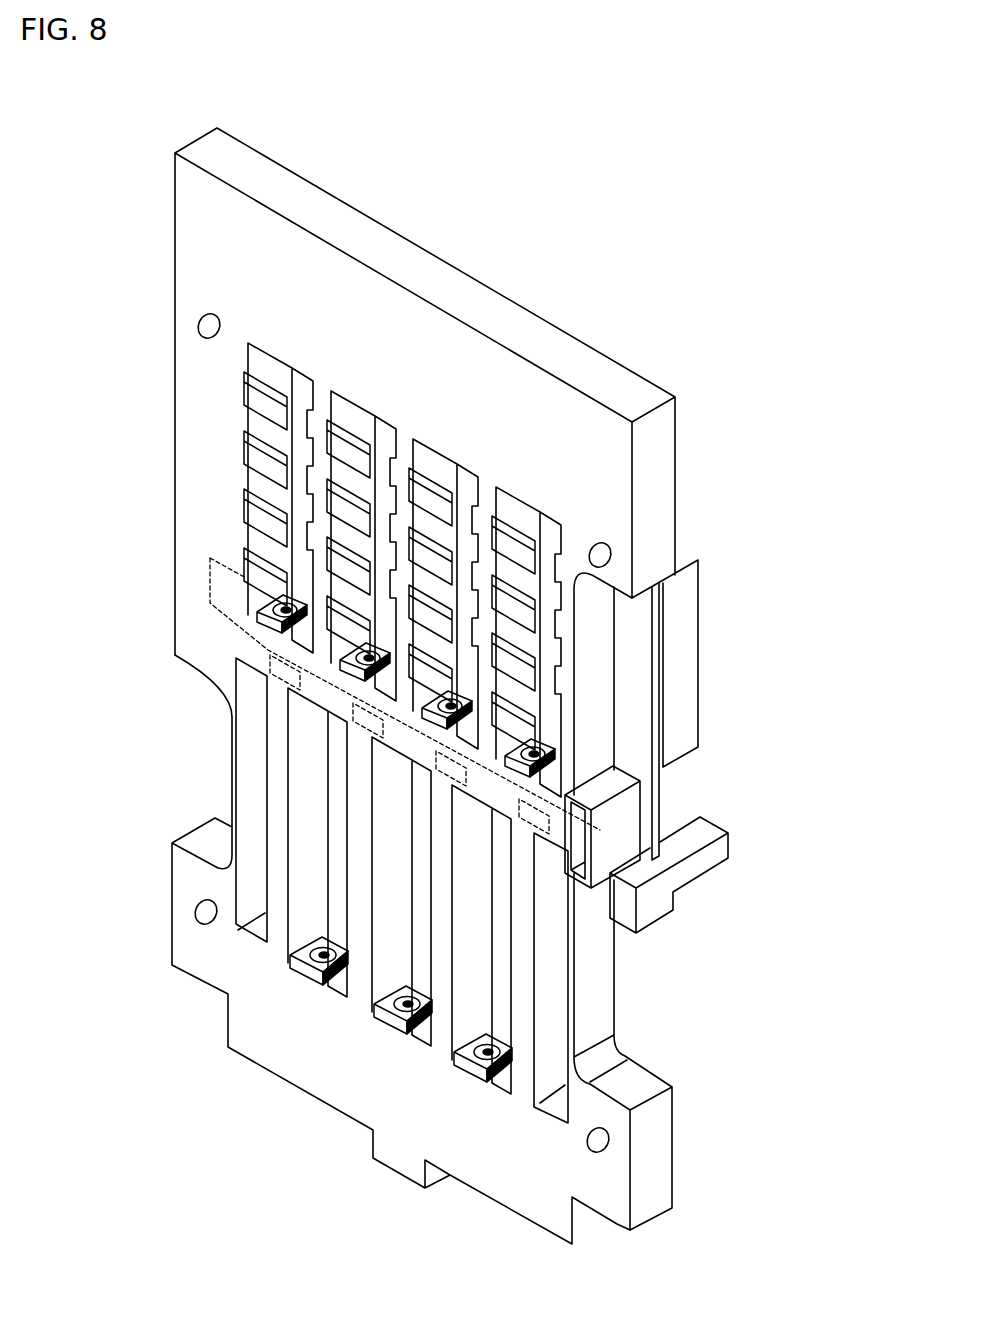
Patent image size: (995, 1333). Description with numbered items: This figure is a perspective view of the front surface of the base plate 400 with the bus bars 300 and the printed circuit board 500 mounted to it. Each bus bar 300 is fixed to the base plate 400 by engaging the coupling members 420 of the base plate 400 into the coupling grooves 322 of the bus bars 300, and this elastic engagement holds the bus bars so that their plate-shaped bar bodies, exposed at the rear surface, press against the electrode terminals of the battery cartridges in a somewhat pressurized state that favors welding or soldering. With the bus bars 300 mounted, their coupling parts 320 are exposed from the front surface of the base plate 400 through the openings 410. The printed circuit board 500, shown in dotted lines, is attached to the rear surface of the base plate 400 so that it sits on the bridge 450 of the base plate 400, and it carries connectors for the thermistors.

The bus bar 300 is at (300, 440).
The coupling part 320 is at (307, 973).
The coupling groove 322 is at (312, 960).
The base plate 400 is at (647, 377).
The opening 410 is at (293, 846).
The coupling member 420 is at (510, 1045).
The bridge 450 is at (250, 648).
The printed circuit board 500 is at (210, 560).